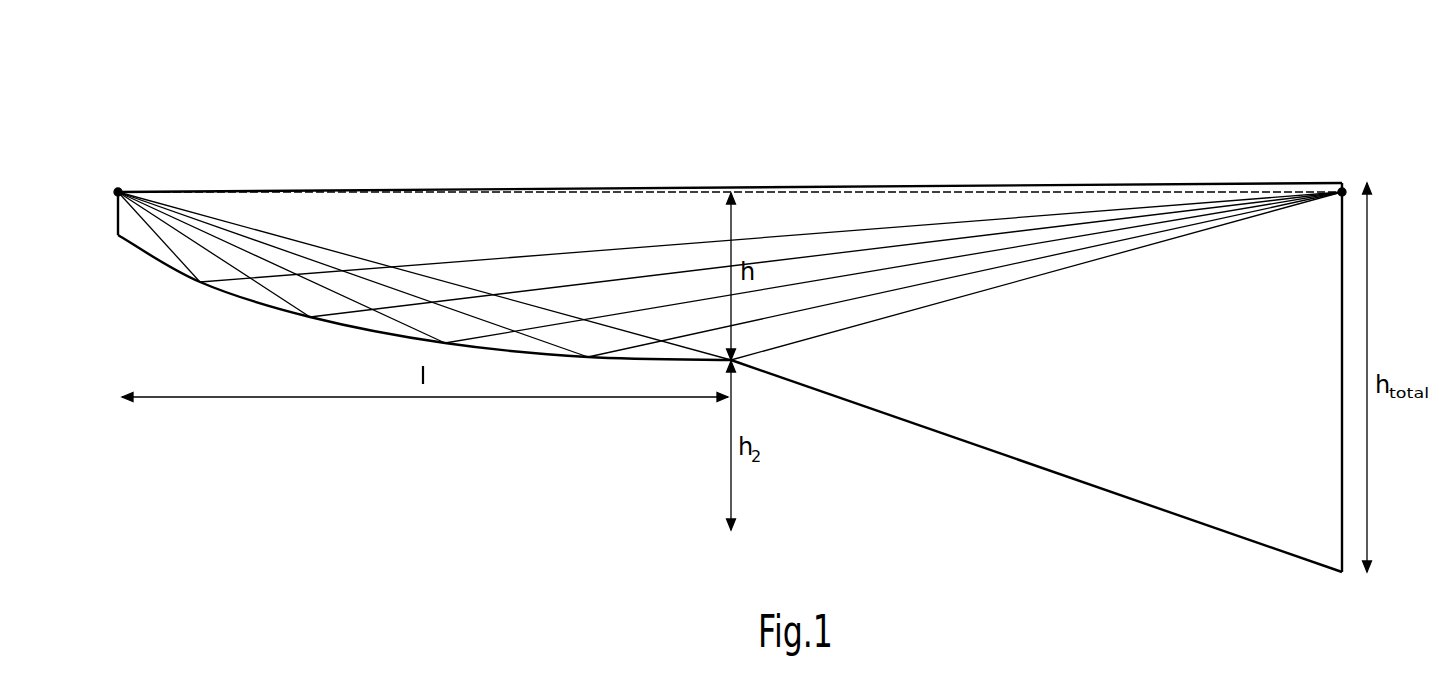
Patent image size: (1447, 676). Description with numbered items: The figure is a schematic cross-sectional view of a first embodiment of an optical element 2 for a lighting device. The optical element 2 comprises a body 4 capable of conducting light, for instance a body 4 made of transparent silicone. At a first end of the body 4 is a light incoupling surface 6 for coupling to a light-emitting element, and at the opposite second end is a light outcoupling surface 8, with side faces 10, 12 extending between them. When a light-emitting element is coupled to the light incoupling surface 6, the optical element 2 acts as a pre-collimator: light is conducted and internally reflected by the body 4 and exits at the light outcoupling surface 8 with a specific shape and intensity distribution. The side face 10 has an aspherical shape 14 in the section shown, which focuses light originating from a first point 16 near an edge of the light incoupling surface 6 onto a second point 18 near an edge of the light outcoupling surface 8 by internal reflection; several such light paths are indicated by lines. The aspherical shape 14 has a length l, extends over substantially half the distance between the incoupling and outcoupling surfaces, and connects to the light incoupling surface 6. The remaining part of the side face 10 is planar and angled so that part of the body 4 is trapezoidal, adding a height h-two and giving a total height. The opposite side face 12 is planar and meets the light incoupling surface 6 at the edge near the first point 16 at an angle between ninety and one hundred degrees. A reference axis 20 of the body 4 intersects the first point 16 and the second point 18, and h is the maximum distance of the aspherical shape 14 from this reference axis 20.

The optical element 2 is at (1300, 92).
The body 4 is at (1168, 492).
The light incoupling surface 6 is at (118, 213).
The light outcoupling surface 8 is at (1342, 288).
The side face 10 is at (808, 418).
The side face 12 is at (808, 167).
The aspherical shape 14 is at (167, 270).
The first point 16 is at (117, 190).
The second point 18 is at (1343, 191).
The reference axis 20 is at (1114, 192).